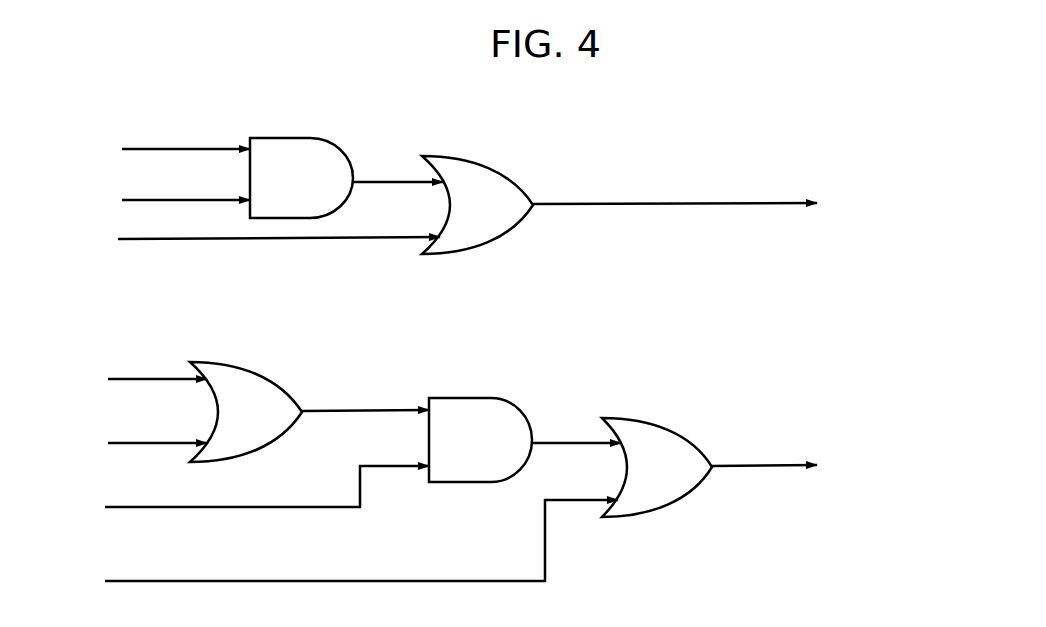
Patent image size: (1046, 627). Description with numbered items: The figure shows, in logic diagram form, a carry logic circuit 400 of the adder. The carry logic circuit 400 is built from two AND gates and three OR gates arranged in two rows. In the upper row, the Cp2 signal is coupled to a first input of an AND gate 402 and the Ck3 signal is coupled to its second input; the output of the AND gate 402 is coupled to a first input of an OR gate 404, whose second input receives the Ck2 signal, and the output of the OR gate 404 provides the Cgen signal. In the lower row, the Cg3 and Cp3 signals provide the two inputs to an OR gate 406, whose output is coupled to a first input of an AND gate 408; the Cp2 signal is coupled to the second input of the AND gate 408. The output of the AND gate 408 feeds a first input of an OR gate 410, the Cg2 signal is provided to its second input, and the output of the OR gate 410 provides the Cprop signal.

The carry logic circuit 400 is at (690, 148).
The AND gate 402 is at (307, 135).
The OR gate 404 is at (505, 173).
The OR gate 406 is at (273, 372).
The AND gate 408 is at (513, 402).
The OR gate 410 is at (673, 425).